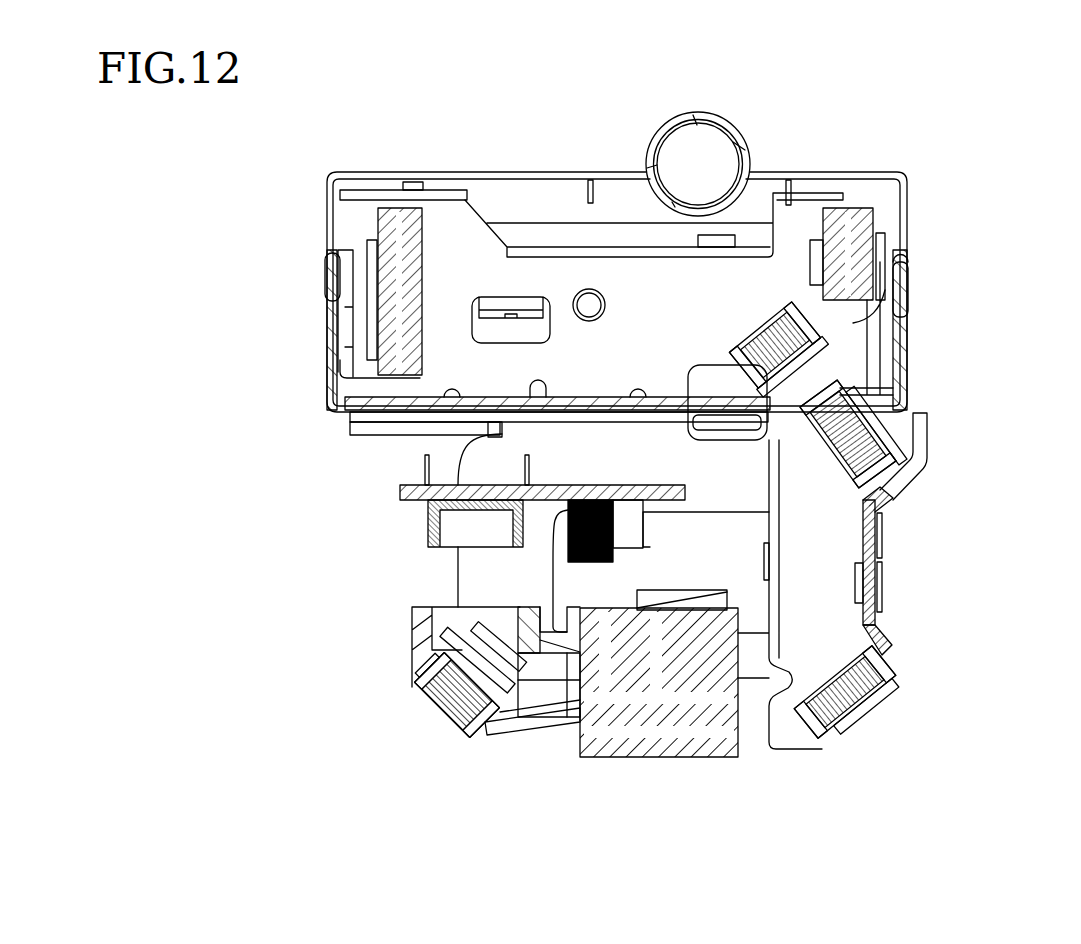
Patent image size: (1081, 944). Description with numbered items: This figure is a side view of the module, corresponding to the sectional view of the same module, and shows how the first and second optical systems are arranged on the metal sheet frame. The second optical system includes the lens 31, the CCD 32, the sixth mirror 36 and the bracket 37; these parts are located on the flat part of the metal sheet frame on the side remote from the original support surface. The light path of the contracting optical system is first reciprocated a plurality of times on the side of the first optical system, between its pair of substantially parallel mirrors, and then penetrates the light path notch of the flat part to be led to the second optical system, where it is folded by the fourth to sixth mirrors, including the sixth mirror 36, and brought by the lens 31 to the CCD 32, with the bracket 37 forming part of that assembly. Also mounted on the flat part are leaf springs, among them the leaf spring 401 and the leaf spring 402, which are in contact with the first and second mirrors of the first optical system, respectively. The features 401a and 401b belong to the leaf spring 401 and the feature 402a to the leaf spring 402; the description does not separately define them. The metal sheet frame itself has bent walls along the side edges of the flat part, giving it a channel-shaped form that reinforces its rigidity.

The lens 31 is at (700, 757).
The CCD 32 is at (400, 500).
The sixth mirror 36 is at (440, 710).
The bracket 37 is at (547, 735).
The leaf spring 401 is at (908, 300).
The end portion of elastic member 401a is at (908, 262).
The bracket portion 401b is at (853, 323).
The leaf spring 402 is at (324, 268).
The end portion of elastic member 402a is at (353, 388).